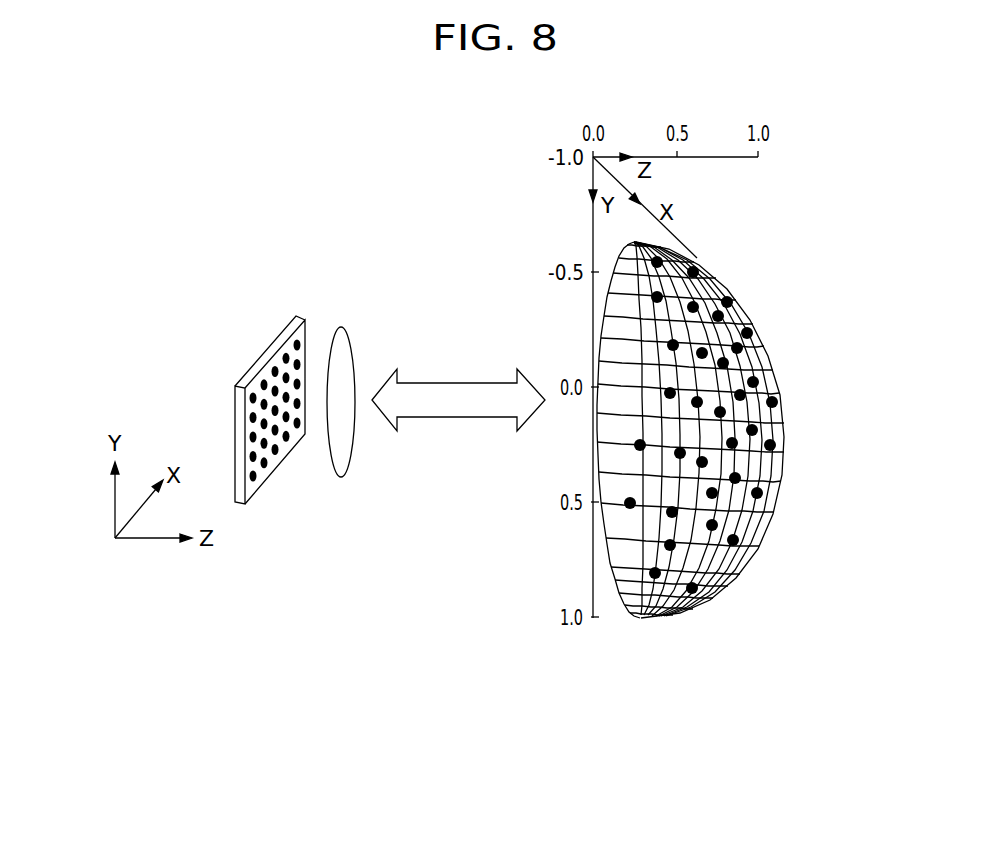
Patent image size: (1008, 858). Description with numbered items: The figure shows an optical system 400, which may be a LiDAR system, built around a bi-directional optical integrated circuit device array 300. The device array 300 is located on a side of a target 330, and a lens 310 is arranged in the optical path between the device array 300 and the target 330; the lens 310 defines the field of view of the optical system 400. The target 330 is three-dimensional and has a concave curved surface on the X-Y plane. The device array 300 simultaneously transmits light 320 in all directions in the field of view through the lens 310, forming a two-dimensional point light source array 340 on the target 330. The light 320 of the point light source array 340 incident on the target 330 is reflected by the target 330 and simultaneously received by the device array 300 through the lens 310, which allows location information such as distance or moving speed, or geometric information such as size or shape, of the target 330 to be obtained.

The bi-directional optical integrated circuit device array 300 is at (262, 351).
The lens 310 is at (342, 326).
The light 320 is at (457, 383).
The target 330 is at (622, 597).
The 2D point light source array 340 is at (737, 301).
The optical system 400 is at (341, 147).